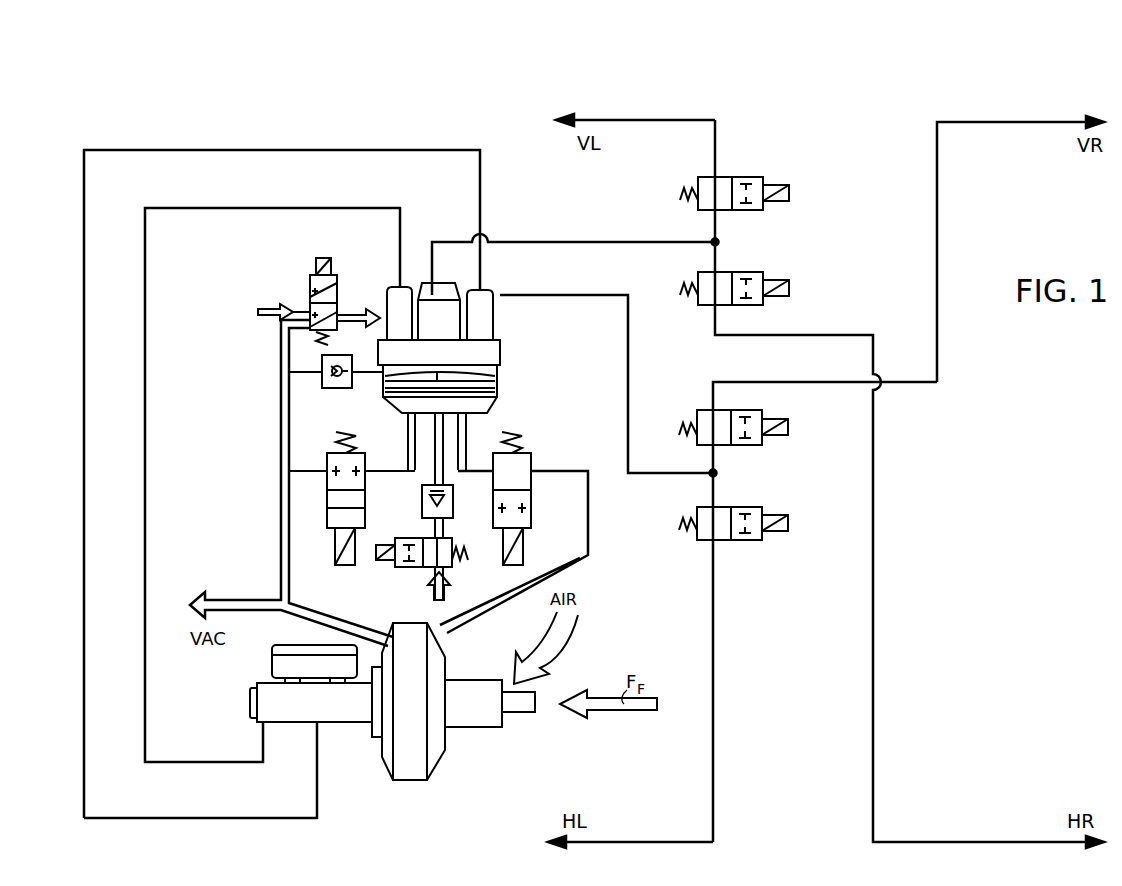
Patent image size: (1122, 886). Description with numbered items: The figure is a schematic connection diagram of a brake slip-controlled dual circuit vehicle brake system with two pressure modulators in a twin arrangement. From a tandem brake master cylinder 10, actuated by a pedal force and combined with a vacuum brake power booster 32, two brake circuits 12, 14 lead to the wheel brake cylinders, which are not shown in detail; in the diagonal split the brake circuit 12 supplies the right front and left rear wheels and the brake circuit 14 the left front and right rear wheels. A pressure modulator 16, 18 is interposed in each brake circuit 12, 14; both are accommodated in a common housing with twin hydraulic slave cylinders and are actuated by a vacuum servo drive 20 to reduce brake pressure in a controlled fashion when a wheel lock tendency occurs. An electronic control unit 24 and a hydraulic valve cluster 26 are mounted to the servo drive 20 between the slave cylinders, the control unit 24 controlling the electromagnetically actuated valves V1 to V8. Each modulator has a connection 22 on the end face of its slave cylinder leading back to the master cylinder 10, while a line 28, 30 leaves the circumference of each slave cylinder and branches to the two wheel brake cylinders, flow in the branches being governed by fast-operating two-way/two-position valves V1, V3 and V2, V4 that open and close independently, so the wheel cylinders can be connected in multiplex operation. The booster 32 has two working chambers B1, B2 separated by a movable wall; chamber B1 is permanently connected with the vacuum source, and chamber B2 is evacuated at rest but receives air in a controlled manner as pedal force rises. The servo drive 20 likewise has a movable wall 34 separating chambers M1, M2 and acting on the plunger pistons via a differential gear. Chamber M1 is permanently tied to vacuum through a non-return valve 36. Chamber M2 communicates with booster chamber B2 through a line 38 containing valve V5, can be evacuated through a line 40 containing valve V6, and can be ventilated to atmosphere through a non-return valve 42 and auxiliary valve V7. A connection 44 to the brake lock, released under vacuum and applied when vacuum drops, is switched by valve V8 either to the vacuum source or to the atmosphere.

The tandem brake master cylinder 10 is at (492, 728).
The brake circuit 12 is at (277, 818).
The brake circuit 14 is at (200, 762).
The pressure modulator 16 is at (502, 325).
The pressure modulator 18 is at (388, 287).
The vacuum servo drive 20 is at (477, 386).
The connection 22 is at (480, 212).
The electronic control unit 24 is at (437, 297).
The hydraulic valve cluster 26 is at (452, 320).
The line 28 is at (628, 376).
The line 30 is at (568, 242).
The vacuum brake power booster 32 is at (417, 721).
The movable wall 34 is at (406, 405).
The non-return valve 36 is at (330, 388).
The line 38 is at (586, 512).
The line 40 is at (295, 468).
The non-return valve 42 is at (450, 515).
The connection 44 is at (350, 324).
The two-way/two-position valve V1 is at (752, 540).
The two-way/two-position valve V2 is at (760, 177).
The two-way/two-position valve V3 is at (755, 445).
The two-way/two-position valve V4 is at (760, 272).
The two-way/two-position valve V5 is at (532, 527).
The two-way/two-position valve V6 is at (330, 520).
The two-way/two-position valve V7 is at (398, 570).
The two-way/two-position valve V8 is at (312, 275).
The working chamber B1 is at (388, 745).
The working chamber B2 is at (432, 748).
The chamber M1 is at (497, 375).
The chamber M2 is at (497, 392).